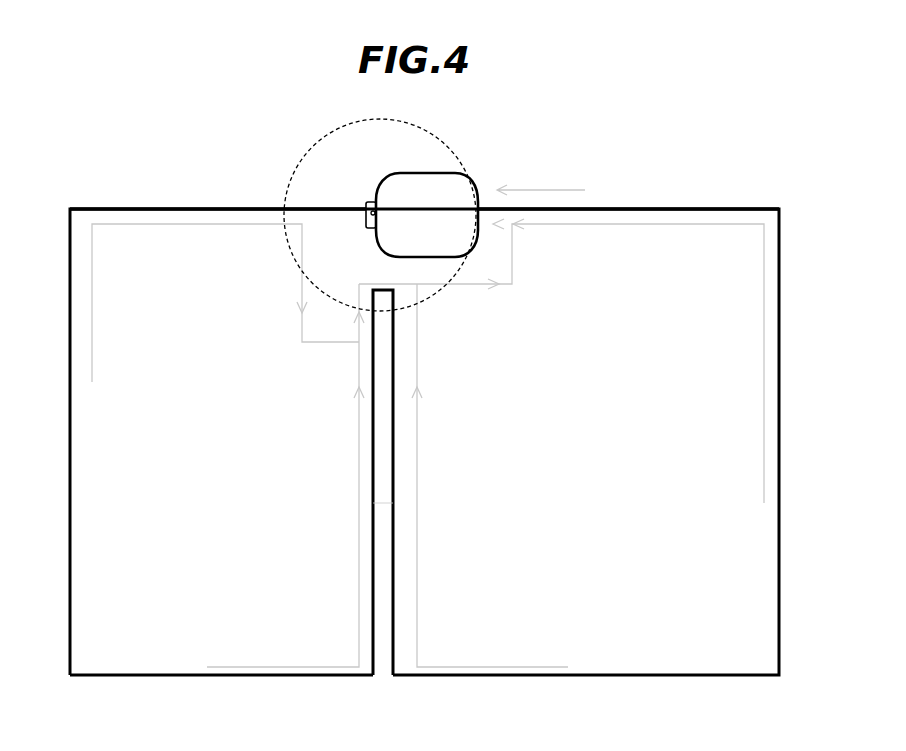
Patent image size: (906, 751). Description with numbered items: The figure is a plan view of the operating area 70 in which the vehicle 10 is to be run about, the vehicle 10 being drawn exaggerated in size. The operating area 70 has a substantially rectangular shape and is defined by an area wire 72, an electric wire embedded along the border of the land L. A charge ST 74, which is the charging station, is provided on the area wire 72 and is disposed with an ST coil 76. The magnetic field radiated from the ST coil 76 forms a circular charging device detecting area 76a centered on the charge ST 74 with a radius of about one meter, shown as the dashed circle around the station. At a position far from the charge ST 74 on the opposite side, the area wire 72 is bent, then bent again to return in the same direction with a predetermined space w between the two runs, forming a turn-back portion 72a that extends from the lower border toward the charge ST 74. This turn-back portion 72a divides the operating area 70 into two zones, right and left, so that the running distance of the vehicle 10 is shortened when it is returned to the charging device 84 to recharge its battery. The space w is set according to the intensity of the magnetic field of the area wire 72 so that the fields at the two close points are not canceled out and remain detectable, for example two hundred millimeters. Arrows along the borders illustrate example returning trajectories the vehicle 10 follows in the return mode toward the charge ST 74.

The vehicle 10 is at (437, 172).
The operating area 70 is at (510, 460).
The area wire 72 is at (630, 209).
The turn-back portion 72a is at (373, 606).
The charge ST 74 is at (366, 202).
The charging device 84 is at (363, 189).
The ST coil 76 is at (366, 228).
The charging device detecting area 76a is at (402, 120).
The land L is at (602, 167).
The predetermined space w is at (392, 503).